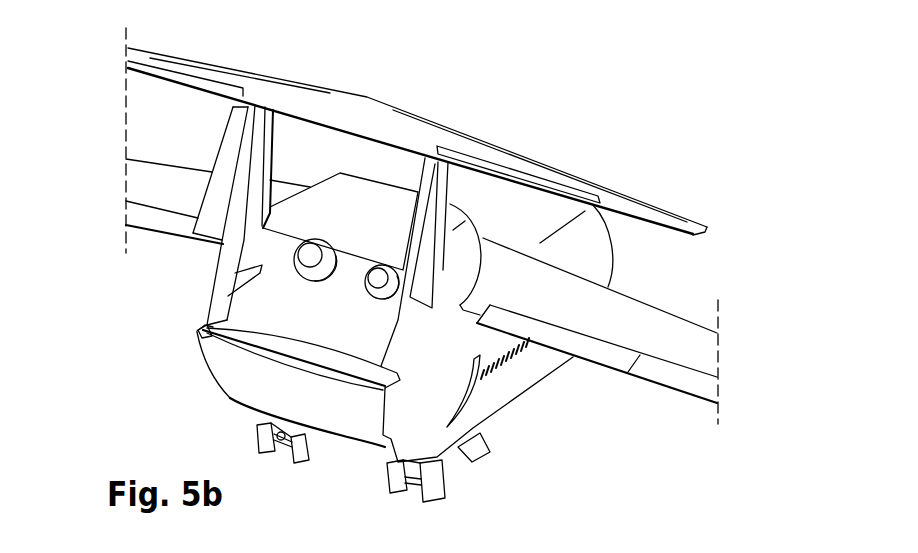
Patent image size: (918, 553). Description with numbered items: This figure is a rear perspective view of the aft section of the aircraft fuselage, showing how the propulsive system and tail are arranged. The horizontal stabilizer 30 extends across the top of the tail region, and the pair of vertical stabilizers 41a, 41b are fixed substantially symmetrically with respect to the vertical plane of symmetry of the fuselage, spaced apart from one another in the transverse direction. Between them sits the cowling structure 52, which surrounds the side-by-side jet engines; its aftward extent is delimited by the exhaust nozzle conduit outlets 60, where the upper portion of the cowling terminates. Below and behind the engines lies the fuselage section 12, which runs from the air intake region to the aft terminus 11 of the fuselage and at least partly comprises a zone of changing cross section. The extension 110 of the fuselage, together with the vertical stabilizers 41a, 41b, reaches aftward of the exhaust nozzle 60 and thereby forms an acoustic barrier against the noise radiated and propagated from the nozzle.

The horizontal stabilizer 30 is at (417, 129).
The cowling structure 52 is at (349, 171).
The vertical stabilizer 41a is at (432, 217).
The vertical stabilizer 41b is at (232, 142).
The exhaust nozzle conduit outlets 60 is at (266, 252).
The extension of the fuselage 110 is at (263, 330).
The aft terminus of the fuselage 11 is at (300, 363).
The section of the fuselage 12 is at (464, 483).